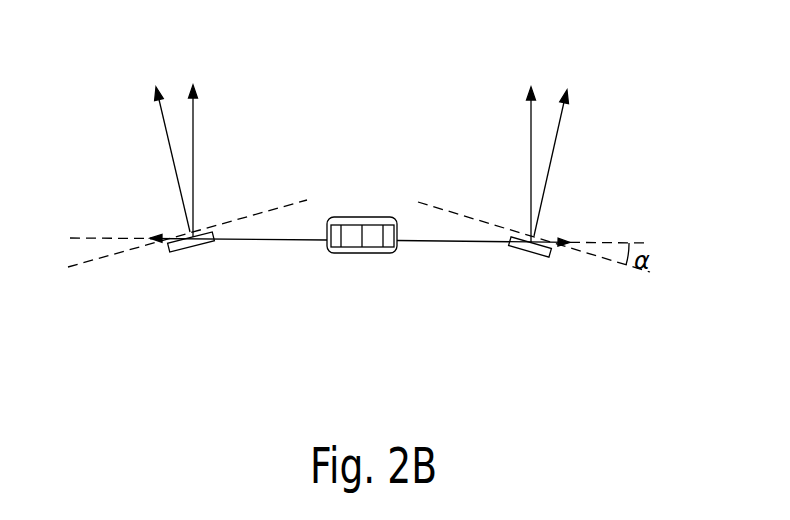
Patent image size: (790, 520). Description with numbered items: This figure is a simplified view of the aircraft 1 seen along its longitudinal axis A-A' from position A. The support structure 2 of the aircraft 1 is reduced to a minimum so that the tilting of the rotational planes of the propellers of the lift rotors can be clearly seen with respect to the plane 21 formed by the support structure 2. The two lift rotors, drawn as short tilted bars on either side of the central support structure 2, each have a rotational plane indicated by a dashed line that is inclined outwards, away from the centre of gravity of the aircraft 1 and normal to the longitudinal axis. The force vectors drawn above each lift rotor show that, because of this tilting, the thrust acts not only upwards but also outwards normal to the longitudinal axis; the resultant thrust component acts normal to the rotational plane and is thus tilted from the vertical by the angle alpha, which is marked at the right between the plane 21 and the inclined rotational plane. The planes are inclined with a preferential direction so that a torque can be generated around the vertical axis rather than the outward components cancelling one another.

The aircraft 1 is at (98, 165).
The support structure 2 is at (417, 240).
The plane formed by the support structure 21 is at (382, 243).